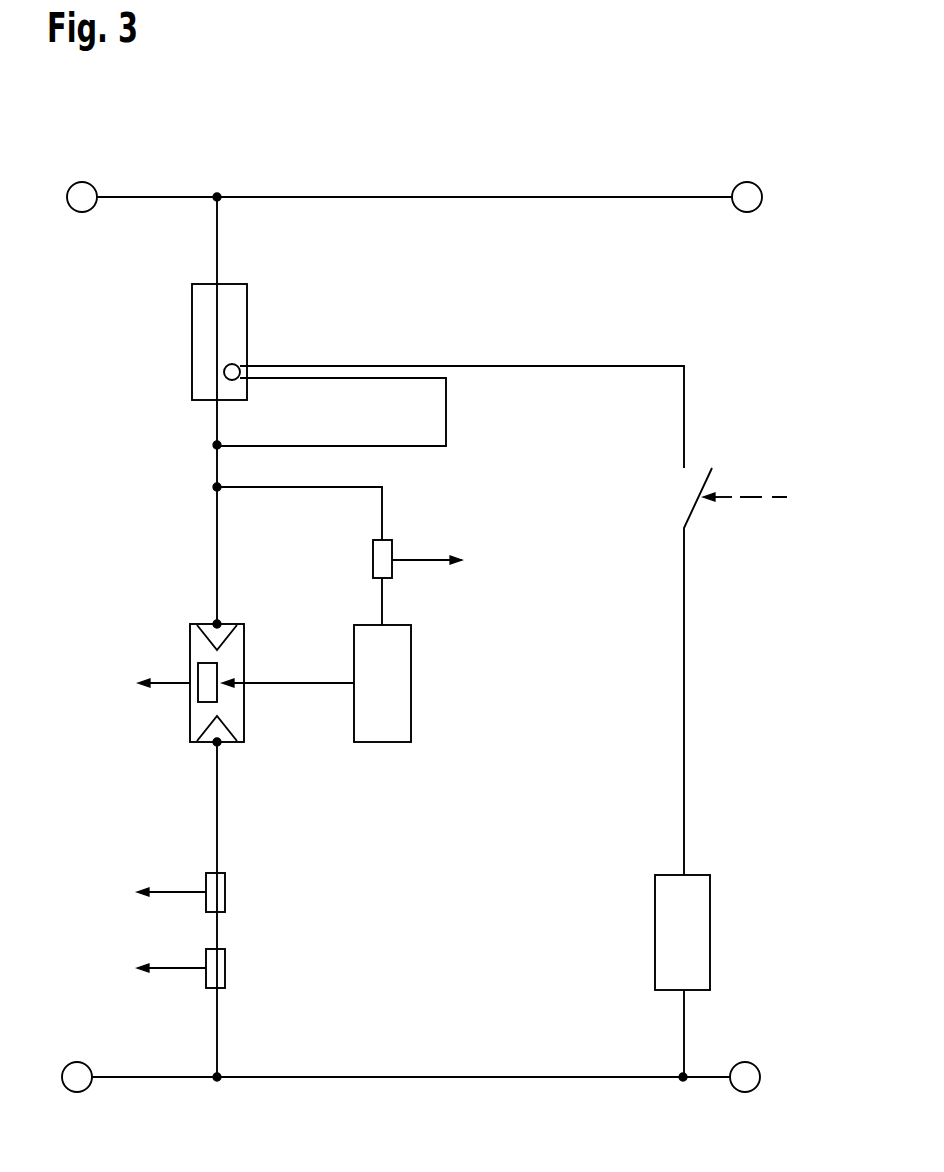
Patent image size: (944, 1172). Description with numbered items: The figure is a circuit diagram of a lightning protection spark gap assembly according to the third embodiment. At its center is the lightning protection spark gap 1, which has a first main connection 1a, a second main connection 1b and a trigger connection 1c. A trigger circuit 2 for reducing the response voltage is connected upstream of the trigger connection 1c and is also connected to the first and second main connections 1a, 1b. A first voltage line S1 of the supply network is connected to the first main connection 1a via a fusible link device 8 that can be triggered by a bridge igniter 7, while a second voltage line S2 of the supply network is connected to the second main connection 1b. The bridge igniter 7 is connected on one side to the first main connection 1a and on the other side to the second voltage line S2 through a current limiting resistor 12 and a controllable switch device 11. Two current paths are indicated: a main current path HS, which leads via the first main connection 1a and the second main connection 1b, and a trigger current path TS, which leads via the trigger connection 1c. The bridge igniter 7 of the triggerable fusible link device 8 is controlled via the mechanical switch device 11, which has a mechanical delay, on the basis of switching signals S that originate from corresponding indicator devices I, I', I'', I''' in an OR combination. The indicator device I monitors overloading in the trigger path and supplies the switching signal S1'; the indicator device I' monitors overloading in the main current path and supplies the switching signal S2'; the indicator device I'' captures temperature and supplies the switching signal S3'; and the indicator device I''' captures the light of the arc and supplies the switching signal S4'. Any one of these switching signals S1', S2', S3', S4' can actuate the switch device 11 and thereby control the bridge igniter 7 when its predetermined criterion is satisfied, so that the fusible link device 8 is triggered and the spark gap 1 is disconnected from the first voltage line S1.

The lightning protection spark gap 1 is at (256, 683).
The first main connection 1a is at (218, 624).
The second main connection 1b is at (217, 742).
The trigger connection 1c is at (245, 683).
The trigger circuit 2 is at (411, 716).
The bridge igniter 7 is at (236, 364).
The fusible link device 8 is at (247, 312).
The controllable switch device 11 is at (702, 488).
The current limiting resistor 12 is at (710, 937).
The first voltage line S1 is at (315, 162).
The second voltage line S2 is at (491, 1042).
The main current path HS is at (215, 469).
The trigger current path TS is at (365, 487).
The indicator device I is at (352, 553).
The indicator device I' is at (257, 897).
The indicator device I'' is at (259, 969).
The indicator device I''' is at (154, 645).
The switching signals S is at (753, 495).
The switching signal S1' is at (427, 549).
The switching signal S2' is at (171, 881).
The switching signal S3' is at (171, 958).
The switching signal S4' is at (164, 672).